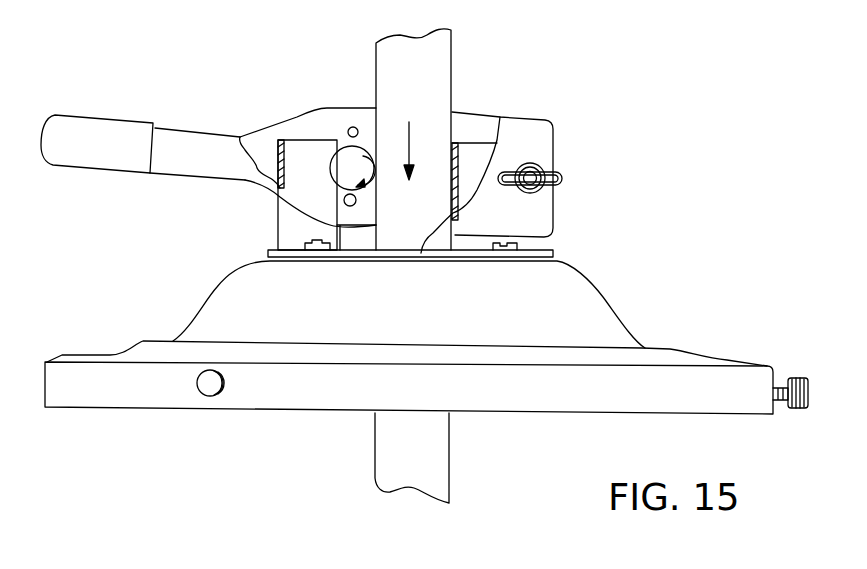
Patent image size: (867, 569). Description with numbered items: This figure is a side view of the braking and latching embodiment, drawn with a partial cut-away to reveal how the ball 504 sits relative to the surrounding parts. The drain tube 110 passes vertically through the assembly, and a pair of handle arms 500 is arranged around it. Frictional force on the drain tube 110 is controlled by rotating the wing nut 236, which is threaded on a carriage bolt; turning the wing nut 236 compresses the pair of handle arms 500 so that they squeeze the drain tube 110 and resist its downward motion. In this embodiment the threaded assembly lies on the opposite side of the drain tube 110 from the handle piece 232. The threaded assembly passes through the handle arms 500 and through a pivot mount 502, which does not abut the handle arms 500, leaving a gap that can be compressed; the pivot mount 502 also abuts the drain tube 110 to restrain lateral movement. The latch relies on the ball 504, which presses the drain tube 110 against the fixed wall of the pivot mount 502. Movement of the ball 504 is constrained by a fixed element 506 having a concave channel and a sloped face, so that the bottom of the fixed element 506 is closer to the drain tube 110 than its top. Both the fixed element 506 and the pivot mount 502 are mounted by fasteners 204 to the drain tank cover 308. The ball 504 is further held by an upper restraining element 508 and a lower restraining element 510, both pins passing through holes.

The drain tube 110 is at (451, 45).
The fasteners 204 is at (533, 249).
The handle piece 232 is at (90, 114).
The wing nut 236 is at (529, 163).
The drain tank cover 308 is at (614, 321).
The handle arms 500 is at (296, 115).
The pivot mount 502 is at (468, 152).
The ball 504 is at (333, 168).
The fixed element 506 is at (278, 144).
The upper restraining element 508 is at (353, 127).
The lower restraining element 510 is at (343, 197).